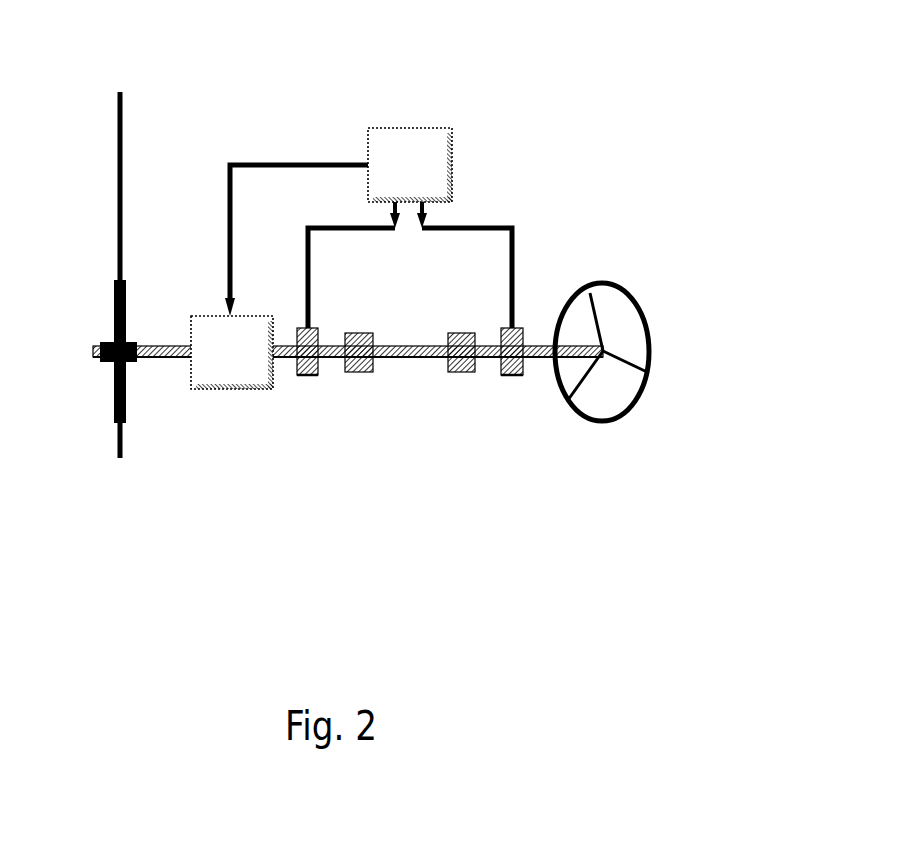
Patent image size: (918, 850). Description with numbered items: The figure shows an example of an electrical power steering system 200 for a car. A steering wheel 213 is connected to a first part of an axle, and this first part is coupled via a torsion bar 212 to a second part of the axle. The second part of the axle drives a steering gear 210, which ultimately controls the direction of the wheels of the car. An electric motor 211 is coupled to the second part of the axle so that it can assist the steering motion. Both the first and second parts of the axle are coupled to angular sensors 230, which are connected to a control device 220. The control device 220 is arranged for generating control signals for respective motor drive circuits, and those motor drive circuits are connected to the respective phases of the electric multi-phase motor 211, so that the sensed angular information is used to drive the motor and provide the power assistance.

The electrical power steering system 200 is at (628, 44).
The steering gear 210 is at (112, 400).
The electric motor 211 is at (223, 390).
The torsion bar 212 is at (408, 360).
The steering wheel 213 is at (572, 400).
The control device 220 is at (408, 123).
The angular sensors 230 is at (323, 323).